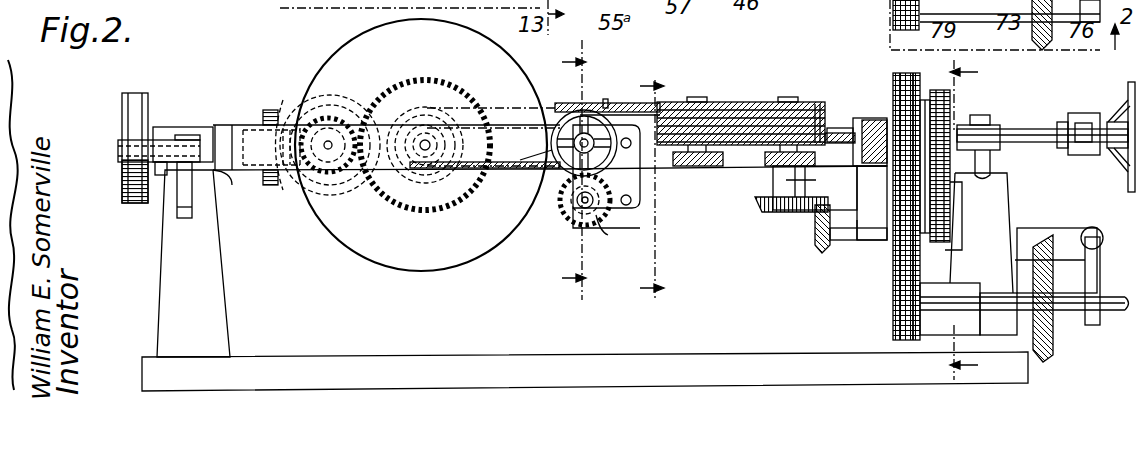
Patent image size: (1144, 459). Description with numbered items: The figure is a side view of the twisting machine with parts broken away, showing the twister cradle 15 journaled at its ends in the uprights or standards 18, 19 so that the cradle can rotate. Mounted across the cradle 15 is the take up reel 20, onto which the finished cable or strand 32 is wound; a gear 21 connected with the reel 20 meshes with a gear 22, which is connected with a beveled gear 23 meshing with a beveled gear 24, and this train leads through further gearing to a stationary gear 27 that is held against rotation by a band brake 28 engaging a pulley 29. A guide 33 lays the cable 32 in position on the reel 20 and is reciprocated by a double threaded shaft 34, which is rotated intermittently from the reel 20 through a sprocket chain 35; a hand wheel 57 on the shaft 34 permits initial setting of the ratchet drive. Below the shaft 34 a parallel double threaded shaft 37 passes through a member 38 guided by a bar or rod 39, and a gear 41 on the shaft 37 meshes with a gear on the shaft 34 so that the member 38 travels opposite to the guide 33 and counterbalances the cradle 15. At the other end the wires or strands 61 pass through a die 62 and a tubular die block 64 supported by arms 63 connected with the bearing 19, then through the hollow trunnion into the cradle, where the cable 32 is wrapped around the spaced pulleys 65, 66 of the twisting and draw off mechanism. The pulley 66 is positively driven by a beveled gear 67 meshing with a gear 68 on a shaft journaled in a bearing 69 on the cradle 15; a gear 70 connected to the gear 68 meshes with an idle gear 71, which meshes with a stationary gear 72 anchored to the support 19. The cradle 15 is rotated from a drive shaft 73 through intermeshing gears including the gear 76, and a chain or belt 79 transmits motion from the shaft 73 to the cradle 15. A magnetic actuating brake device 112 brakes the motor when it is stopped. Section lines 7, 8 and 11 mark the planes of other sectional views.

The twister cradle 15 is at (222, 127).
The upright or standard 18 is at (210, 300).
The upright or standard 19 is at (992, 218).
The take up reel 20 is at (365, 250).
The gear 21 is at (447, 78).
The gear 22 is at (338, 110).
The beveled gear 23 is at (297, 125).
The beveled gear 24 is at (317, 165).
The stationary gear 27 is at (270, 108).
The band brake 28 is at (135, 100).
The pulley 29 is at (150, 112).
The finished cable or strand 32 is at (505, 103).
The guide 33 is at (608, 98).
The double threaded shaft 34 is at (580, 125).
The sprocket chain 35 is at (525, 125).
The shaft 37 is at (567, 210).
The member 38 is at (598, 228).
The bar or rod 39 is at (640, 215).
The gear 41 is at (576, 218).
The hand wheel 57 is at (532, 170).
The wires or strands 61 is at (1118, 108).
The die plate or die 62 is at (1128, 86).
The arms 63 is at (1012, 130).
The tubular die block 64 is at (1070, 158).
The pulley 65 is at (708, 102).
The pulley 66 is at (806, 102).
The gear 67 is at (760, 205).
The gear 68 is at (822, 255).
The bearing 69 is at (866, 242).
The gear 70 is at (948, 252).
The idle gear 71 is at (940, 198).
The stationary gear 72 is at (948, 105).
The drive shaft 73 is at (992, 298).
The gear 76 is at (1056, 340).
The chain or belt 79 is at (898, 80).
The magnetic actuating brake device 112 is at (1095, 222).
The section line 7 is at (662, 191).
The section line 8 is at (970, 220).
The section line 11 is at (570, 170).